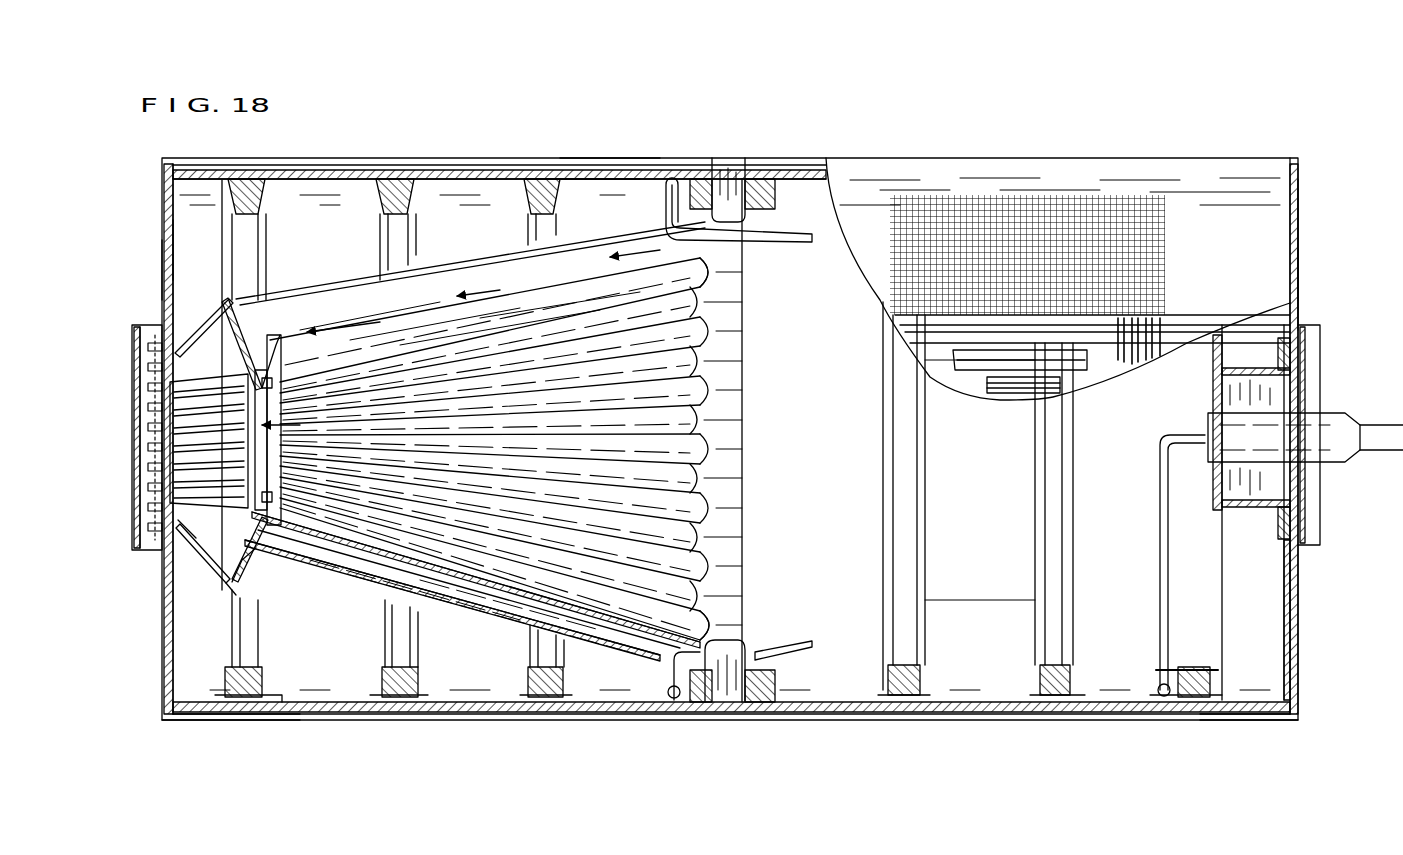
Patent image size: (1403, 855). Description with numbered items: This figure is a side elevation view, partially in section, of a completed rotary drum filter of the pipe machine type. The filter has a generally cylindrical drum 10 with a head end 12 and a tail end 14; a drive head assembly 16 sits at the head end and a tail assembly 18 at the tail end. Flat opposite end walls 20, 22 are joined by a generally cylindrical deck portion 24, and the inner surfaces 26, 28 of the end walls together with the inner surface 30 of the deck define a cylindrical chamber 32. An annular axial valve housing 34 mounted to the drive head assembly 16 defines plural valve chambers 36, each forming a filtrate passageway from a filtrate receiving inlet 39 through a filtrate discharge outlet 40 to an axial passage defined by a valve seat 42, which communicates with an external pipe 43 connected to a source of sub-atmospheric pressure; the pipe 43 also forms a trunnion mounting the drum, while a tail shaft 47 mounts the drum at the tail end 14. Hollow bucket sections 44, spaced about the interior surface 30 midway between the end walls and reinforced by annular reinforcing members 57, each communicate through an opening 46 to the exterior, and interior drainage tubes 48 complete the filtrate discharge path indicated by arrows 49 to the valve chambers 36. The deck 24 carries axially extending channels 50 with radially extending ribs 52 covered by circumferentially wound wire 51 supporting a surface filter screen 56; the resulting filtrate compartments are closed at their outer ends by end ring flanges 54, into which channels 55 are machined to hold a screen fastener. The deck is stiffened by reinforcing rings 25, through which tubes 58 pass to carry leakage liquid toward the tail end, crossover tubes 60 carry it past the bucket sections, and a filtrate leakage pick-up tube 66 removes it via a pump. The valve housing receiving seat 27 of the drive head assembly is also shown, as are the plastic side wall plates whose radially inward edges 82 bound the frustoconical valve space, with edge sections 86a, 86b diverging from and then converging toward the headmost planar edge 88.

The drum 10 is at (845, 150).
The head end 12 is at (138, 222).
The tail end 14 is at (1310, 235).
The drive head assembly 16 is at (187, 563).
The tail assembly 18 is at (1252, 535).
The end wall 20 is at (163, 270).
The end wall 22 is at (1300, 275).
The deck portion 24 is at (604, 160).
The reinforcing rings 25 is at (262, 236).
The inner surface 26 is at (174, 242).
The valve housing receiving seat 27 is at (216, 583).
The inner surface 28 is at (1285, 620).
The inner surface 30 is at (600, 183).
The cylindrical chamber 32 is at (815, 419).
The annular axial valve housing 34 is at (250, 320).
The valve chambers 36 is at (200, 332).
The filtrate receiving inlet 39 is at (246, 300).
The filtrate discharge outlet 40 is at (205, 388).
The valve seat 42 is at (355, 405).
The external pipe 43 is at (96, 580).
The bucket sections 44 is at (750, 292).
The opening 46 is at (728, 165).
The tail shaft 47 is at (1385, 462).
The interior drainage conduits or tubes 48 is at (433, 284).
The arrows 49 is at (483, 283).
The channels 50 is at (1002, 380).
The wire 51 is at (1148, 318).
The ribs 52 is at (1060, 392).
The end ring flanges 54 is at (164, 714).
The channels 55 is at (165, 722).
The surface filter screen 56 is at (1230, 162).
The annular reinforcing members 57 is at (780, 198).
The tubes 58 is at (345, 695).
The crossover tubes 60 is at (812, 250).
The filtrate leakage pick-up tube 66 is at (1160, 545).
The radially inward edges 82 is at (176, 502).
The first planar edge section 86a is at (270, 482).
The second planar edge section 86b is at (246, 565).
The headmost planar edge 88 is at (185, 540).